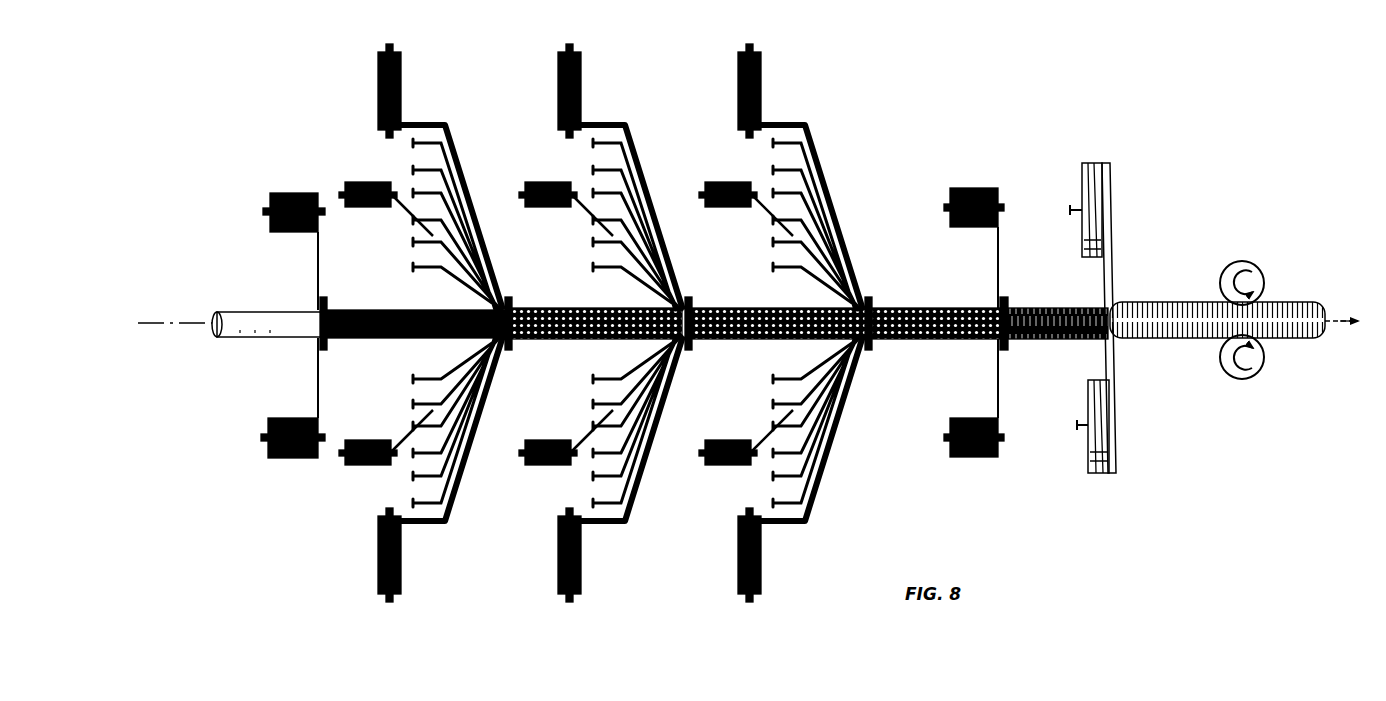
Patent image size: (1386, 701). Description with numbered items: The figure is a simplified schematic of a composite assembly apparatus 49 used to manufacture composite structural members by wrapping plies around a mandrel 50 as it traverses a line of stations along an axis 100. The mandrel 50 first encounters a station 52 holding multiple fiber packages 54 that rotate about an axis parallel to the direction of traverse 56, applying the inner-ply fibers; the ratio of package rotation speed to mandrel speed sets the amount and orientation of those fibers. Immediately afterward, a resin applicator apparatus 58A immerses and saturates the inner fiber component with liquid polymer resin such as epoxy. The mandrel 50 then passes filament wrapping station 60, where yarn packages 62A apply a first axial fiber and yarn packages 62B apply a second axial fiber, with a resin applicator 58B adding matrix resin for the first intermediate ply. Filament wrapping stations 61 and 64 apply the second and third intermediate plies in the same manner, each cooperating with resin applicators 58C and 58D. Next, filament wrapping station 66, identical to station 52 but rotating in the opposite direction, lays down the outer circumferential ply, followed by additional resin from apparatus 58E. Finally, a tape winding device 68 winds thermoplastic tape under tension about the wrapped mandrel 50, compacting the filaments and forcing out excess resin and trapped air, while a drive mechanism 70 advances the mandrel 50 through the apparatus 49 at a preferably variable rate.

The composite assembly apparatus 49 is at (937, 80).
The mandrel 50 is at (238, 341).
The station 52 is at (297, 184).
The fiber package 54 is at (284, 234).
The direction of traverse 56 is at (1332, 318).
The resin applicator apparatus 58A is at (325, 299).
The resin applicator 58B is at (509, 299).
The resin applicator 58C is at (689, 299).
The resin applicator 58D is at (869, 299).
The resin applicator apparatus 58E is at (1004, 299).
The filament wrapping station 60 is at (389, 40).
The filament wrapping station 61 is at (569, 40).
The yarn packages 62A is at (370, 182).
The yarn packages 62B is at (401, 74).
The filament wrapping station 64 is at (749, 40).
The filament wrapping station 66 is at (979, 188).
The tape winding device 68 is at (1106, 163).
The drive mechanism 70 is at (1250, 262).
The axis 100 is at (158, 310).